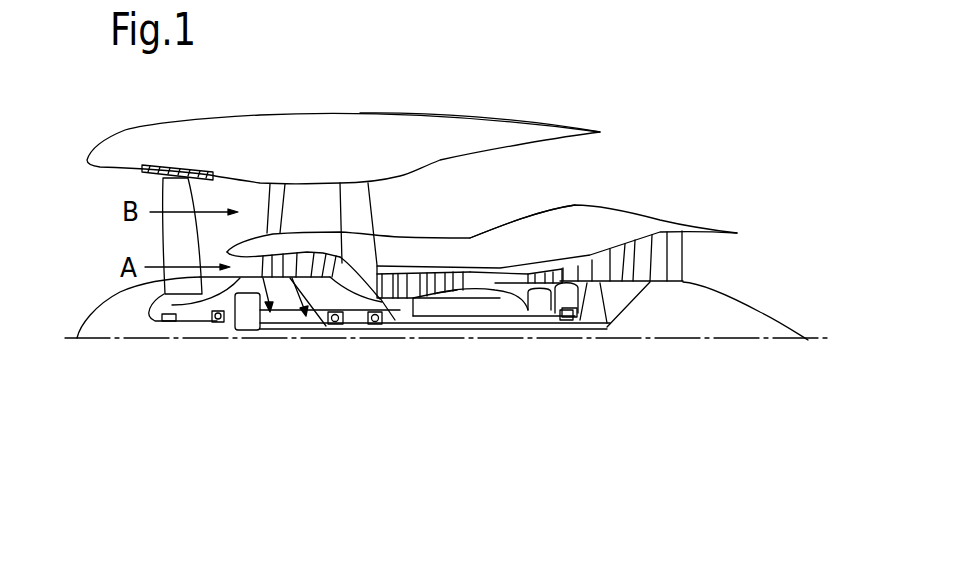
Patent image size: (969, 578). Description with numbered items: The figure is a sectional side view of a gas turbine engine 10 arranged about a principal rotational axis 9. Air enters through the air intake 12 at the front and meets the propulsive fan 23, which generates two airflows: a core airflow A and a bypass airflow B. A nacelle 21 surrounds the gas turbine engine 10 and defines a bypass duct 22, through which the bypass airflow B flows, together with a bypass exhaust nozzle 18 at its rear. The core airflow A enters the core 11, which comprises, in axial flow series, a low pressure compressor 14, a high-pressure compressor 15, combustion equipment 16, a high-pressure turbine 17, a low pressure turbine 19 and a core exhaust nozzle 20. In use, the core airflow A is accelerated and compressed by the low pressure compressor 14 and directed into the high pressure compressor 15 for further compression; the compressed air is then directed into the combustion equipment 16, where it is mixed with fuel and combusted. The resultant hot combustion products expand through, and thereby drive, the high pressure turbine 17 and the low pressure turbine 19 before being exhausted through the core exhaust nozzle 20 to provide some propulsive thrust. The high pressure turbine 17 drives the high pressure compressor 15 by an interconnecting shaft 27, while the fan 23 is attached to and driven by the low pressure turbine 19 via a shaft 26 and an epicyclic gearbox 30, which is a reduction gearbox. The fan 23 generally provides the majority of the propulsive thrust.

The principal rotational axis 9 is at (653, 338).
The gas turbine engine 10 is at (150, 126).
The core 11 is at (479, 260).
The air intake 12 is at (92, 208).
The low pressure compressor 14 is at (305, 256).
The high-pressure compressor 15 is at (423, 275).
The combustion equipment 16 is at (503, 288).
The high-pressure turbine 17 is at (547, 263).
The bypass exhaust nozzle 18 is at (652, 168).
The low pressure turbine 19 is at (660, 248).
The core exhaust nozzle 20 is at (714, 265).
The nacelle 21 is at (363, 127).
The bypass duct 22 is at (583, 180).
The propulsive fan 23 is at (162, 237).
The shaft 26 is at (422, 329).
The interconnecting shaft 27 is at (460, 320).
The epicyclic gearbox 30 is at (248, 323).